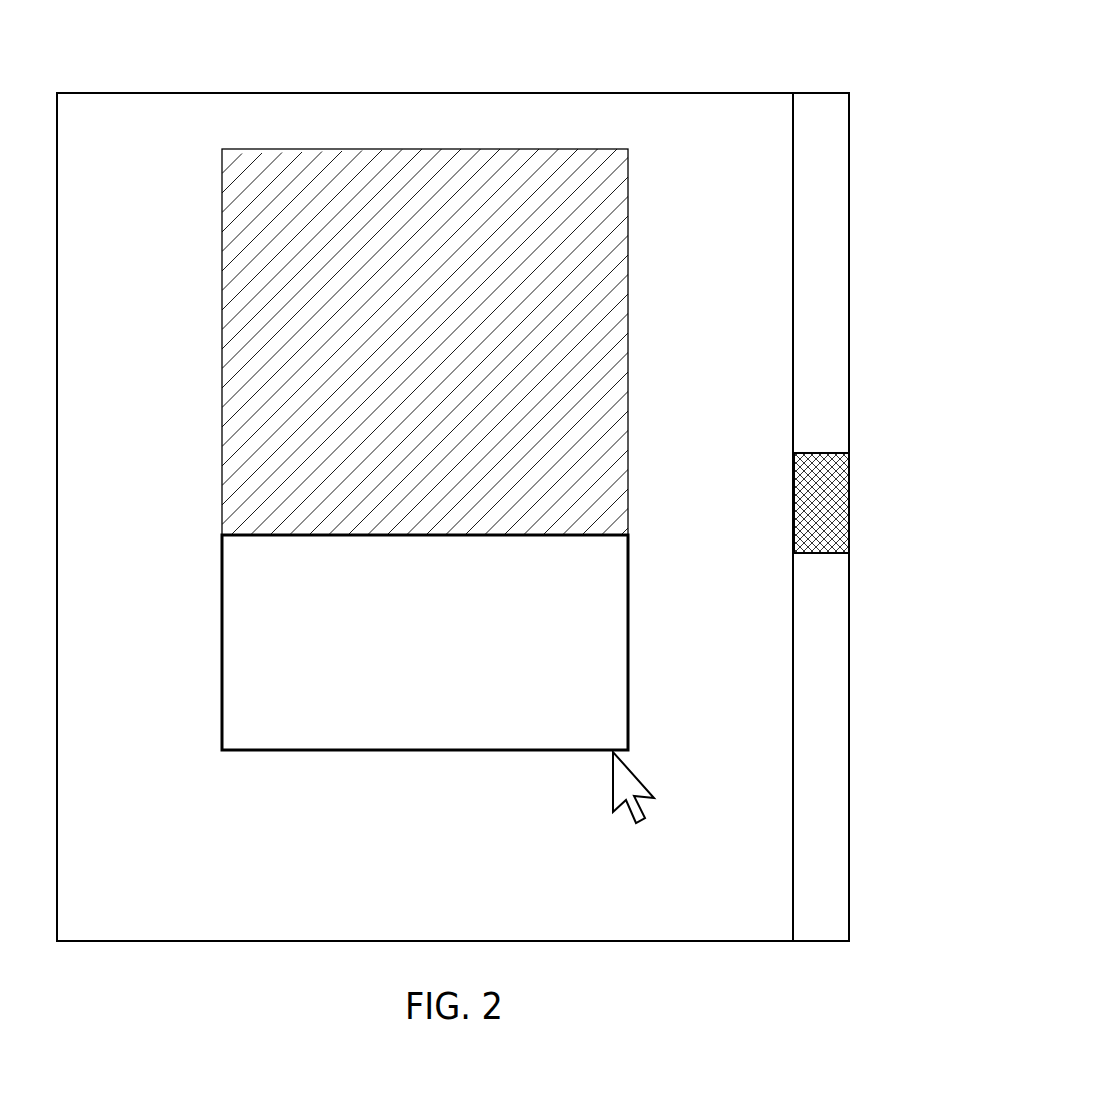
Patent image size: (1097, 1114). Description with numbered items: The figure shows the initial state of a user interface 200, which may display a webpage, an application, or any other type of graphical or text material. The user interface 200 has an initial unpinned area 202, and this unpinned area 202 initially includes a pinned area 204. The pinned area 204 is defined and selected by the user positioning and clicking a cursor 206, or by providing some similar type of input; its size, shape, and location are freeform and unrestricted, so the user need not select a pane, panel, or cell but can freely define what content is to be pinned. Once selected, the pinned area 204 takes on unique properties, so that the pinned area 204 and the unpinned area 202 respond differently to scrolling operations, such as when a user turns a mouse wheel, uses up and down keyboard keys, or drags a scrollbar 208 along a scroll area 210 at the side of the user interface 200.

The user interface 200 is at (142, 175).
The unpinned area 202 is at (610, 217).
The pinned area 204 is at (331, 752).
The cursor 206 is at (628, 818).
The scrollbar 208 is at (794, 503).
The scroll area 210 is at (819, 105).